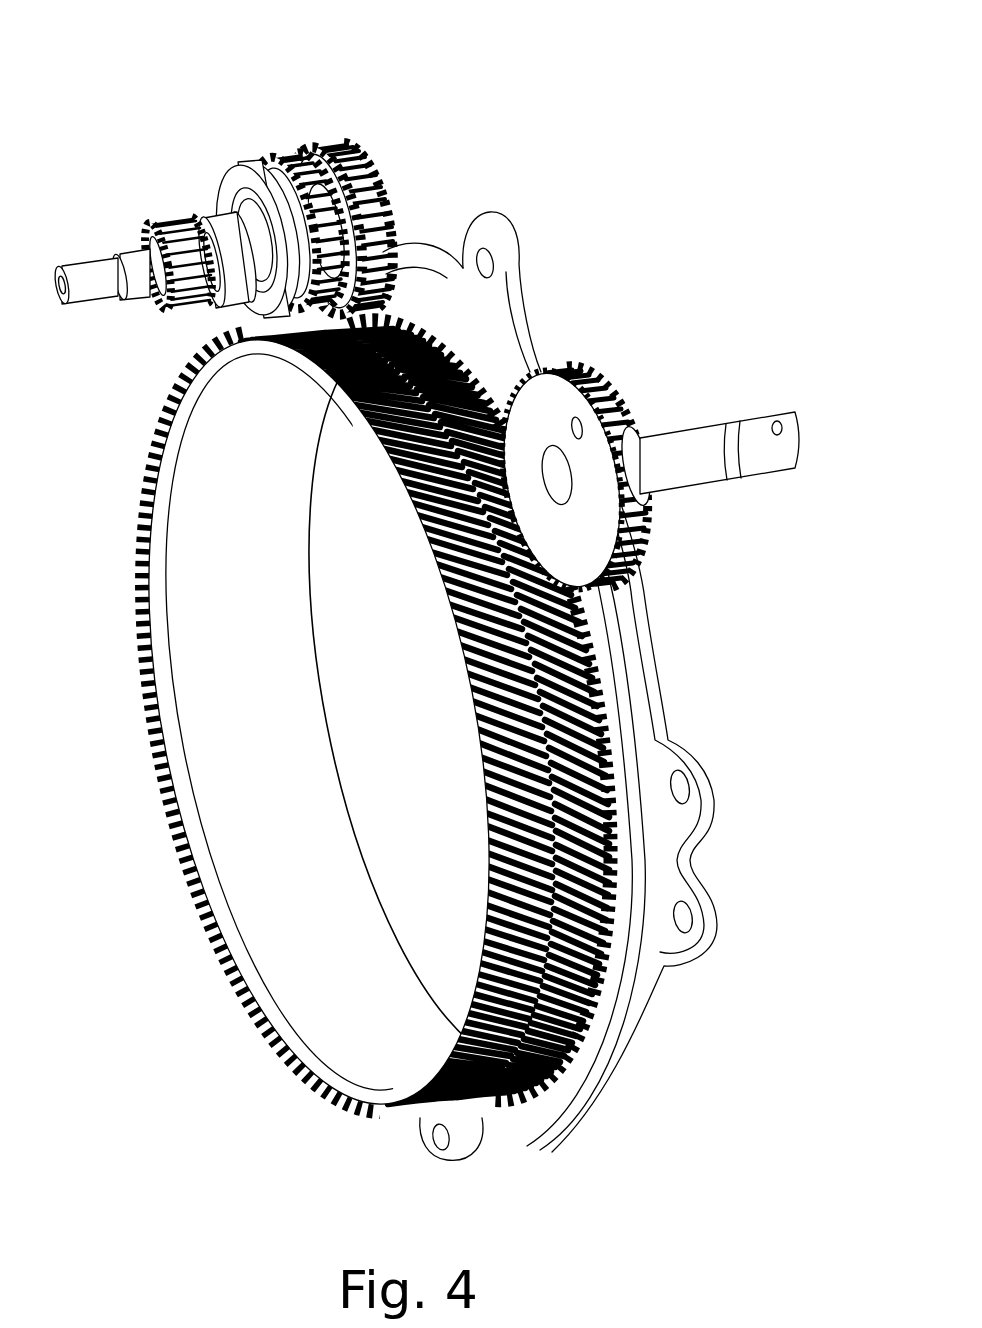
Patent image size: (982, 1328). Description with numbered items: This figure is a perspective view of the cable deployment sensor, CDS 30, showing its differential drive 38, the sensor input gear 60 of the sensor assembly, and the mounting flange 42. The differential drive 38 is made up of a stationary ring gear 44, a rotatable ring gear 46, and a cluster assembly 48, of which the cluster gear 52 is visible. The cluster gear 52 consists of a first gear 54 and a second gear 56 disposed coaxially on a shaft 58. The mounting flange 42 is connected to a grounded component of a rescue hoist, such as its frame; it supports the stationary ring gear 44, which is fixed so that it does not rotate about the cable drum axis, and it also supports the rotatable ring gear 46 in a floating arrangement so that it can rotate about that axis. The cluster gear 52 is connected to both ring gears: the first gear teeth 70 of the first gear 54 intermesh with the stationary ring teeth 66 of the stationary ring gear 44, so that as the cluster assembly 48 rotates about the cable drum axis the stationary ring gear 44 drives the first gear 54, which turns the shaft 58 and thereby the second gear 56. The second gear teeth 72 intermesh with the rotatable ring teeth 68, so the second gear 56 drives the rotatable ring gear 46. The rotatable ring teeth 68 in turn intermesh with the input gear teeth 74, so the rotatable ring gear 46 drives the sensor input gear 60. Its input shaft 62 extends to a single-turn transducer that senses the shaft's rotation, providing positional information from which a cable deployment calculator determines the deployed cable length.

The cable deployment sensor 30 is at (550, 115).
The differential drive 38 is at (218, 316).
The mounting flange 42 is at (495, 328).
The stationary ring gear 44 is at (426, 767).
The rotatable ring gear 46 is at (501, 712).
The cluster assembly 48 is at (253, 160).
The cluster gear 52 is at (208, 207).
The first gear 54 is at (231, 163).
The second gear 56 is at (365, 188).
The shaft 58 is at (215, 232).
The sensor input gear 60 is at (625, 448).
The input shaft 62 is at (775, 485).
The stationary ring teeth 66 is at (383, 1117).
The rotatable ring teeth 68 is at (606, 748).
The first gear teeth 70 is at (282, 157).
The second gear teeth 72 is at (374, 180).
The input gear teeth 74 is at (588, 378).